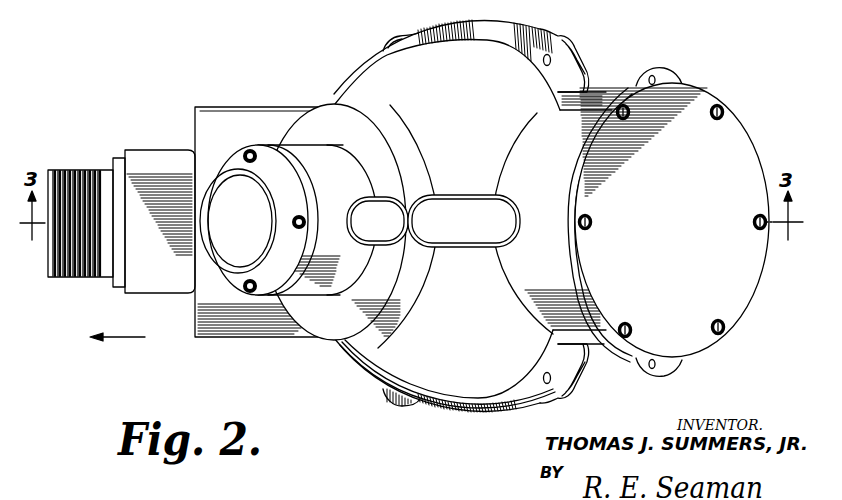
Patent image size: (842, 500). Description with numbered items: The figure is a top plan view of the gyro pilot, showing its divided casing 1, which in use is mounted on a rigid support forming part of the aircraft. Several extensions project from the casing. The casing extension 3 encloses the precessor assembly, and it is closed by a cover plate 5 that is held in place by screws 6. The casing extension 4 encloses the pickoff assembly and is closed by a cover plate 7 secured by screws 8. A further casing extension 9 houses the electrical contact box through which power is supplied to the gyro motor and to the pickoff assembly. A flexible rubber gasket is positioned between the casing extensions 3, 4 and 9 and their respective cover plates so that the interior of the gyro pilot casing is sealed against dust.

The divided casing 1 is at (397, 354).
The casing extension 3 is at (330, 165).
The casing extension 4 is at (535, 135).
The cover plate 5 is at (230, 253).
The screws 6 is at (247, 153).
The cover plate 7 is at (745, 142).
The screws 8 is at (722, 110).
The casing extension 9 is at (157, 160).